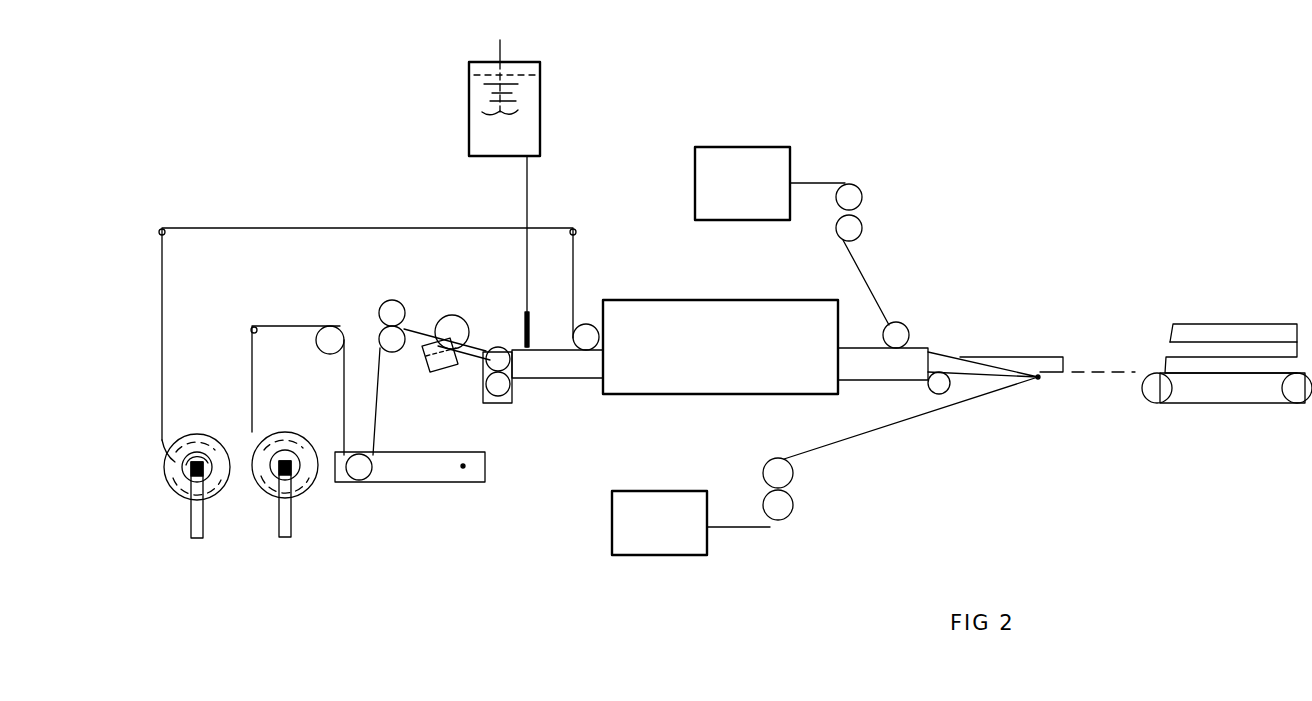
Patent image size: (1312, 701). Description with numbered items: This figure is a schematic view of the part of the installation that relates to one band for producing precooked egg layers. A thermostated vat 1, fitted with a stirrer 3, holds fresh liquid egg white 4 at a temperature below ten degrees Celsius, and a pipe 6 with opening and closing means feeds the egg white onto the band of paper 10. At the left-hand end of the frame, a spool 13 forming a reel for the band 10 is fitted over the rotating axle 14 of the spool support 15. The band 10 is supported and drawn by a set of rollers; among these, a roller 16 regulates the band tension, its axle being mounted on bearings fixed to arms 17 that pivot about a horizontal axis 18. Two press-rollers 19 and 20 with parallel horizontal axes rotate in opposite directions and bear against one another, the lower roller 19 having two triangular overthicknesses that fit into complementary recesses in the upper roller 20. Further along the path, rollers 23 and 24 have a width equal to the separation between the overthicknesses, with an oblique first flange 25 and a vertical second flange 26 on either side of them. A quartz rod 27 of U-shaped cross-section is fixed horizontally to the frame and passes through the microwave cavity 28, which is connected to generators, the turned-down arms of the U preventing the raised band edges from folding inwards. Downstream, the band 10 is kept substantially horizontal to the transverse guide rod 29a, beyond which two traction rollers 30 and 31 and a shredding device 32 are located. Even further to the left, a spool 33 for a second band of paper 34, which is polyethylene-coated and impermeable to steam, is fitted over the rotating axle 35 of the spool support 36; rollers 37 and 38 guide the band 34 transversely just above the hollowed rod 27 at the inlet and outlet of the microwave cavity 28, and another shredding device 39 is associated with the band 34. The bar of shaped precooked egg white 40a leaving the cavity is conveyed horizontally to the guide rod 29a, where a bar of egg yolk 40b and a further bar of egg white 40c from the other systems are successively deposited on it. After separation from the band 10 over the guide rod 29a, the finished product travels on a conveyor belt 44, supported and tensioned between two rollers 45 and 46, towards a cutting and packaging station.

The vat 1 is at (469, 98).
The stirrer 3 is at (512, 110).
The fresh liquid egg white 4 is at (523, 133).
The pipe 6 is at (522, 260).
The band of paper 10 is at (295, 326).
The spool 13 is at (287, 440).
The rotating axle 14 is at (275, 480).
The spool support 15 is at (292, 517).
The roller 16 is at (357, 478).
The arms 17 is at (412, 495).
The horizontal axis 18 is at (465, 470).
The lower press-roller 19 is at (397, 352).
The upper press-roller 20 is at (385, 304).
The roller 23 is at (455, 316).
The roller 24 is at (498, 345).
The first flange 25 is at (440, 364).
The second flange 26 is at (493, 403).
The quartz rod 27 is at (583, 368).
The microwave cavity 28 is at (735, 382).
The guide rod 29a is at (1038, 384).
The traction roller 30 is at (785, 470).
The traction roller 31 is at (785, 512).
The shredding device 32 is at (677, 545).
The spool 33 is at (184, 440).
The band of paper 34 is at (292, 228).
The rotating axle 35 is at (200, 460).
The spool support 36 is at (202, 515).
The roller 37 is at (587, 326).
The roller 38 is at (898, 328).
The shredding device 39 is at (754, 162).
The bar of shaped precooked egg white 40a is at (1040, 360).
The bar of shaped precooked egg yolk 40b is at (1209, 347).
The bar of egg white 40c is at (1242, 330).
The conveyor belt 44 is at (1248, 405).
The roller 45 is at (1157, 396).
The roller 46 is at (1303, 398).